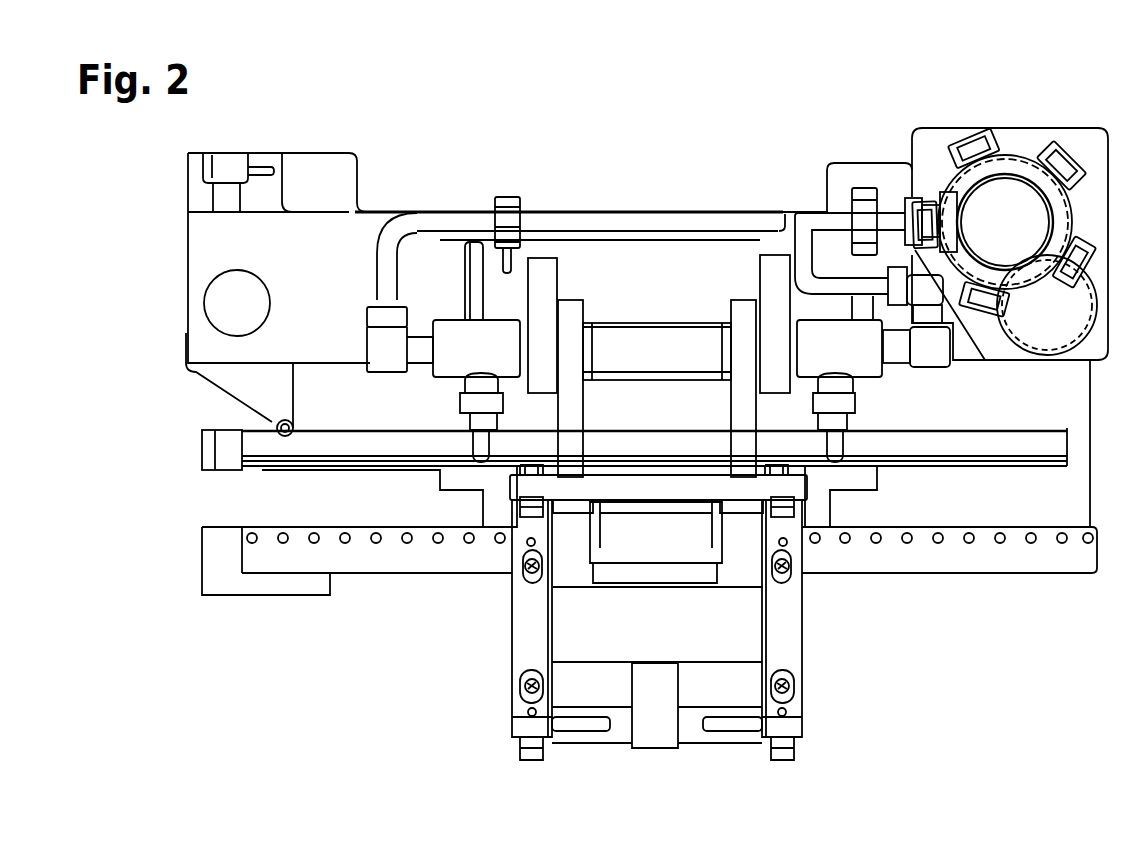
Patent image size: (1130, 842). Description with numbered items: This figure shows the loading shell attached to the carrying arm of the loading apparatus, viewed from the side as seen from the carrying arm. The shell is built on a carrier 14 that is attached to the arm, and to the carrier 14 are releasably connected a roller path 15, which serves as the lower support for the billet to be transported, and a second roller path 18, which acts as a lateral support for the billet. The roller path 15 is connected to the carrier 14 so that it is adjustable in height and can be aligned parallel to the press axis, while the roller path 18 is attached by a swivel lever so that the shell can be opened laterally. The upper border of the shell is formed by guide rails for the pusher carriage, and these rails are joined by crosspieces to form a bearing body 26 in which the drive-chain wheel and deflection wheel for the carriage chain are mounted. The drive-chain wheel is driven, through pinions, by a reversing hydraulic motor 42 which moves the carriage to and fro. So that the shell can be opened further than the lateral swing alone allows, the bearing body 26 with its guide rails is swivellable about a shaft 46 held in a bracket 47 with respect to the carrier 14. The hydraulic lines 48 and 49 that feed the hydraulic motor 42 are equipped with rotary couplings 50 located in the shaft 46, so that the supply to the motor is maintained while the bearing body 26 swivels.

The carrier 14 is at (530, 633).
The roller path 15 is at (390, 553).
The roller path 18 is at (282, 452).
The bearing body 26 is at (411, 180).
The hydraulic motor 42 is at (1007, 200).
The shaft 46 is at (680, 338).
The bracket 47 is at (647, 487).
The line 48 is at (578, 218).
The line 49 is at (820, 218).
The rotary couplings 50 is at (484, 338).